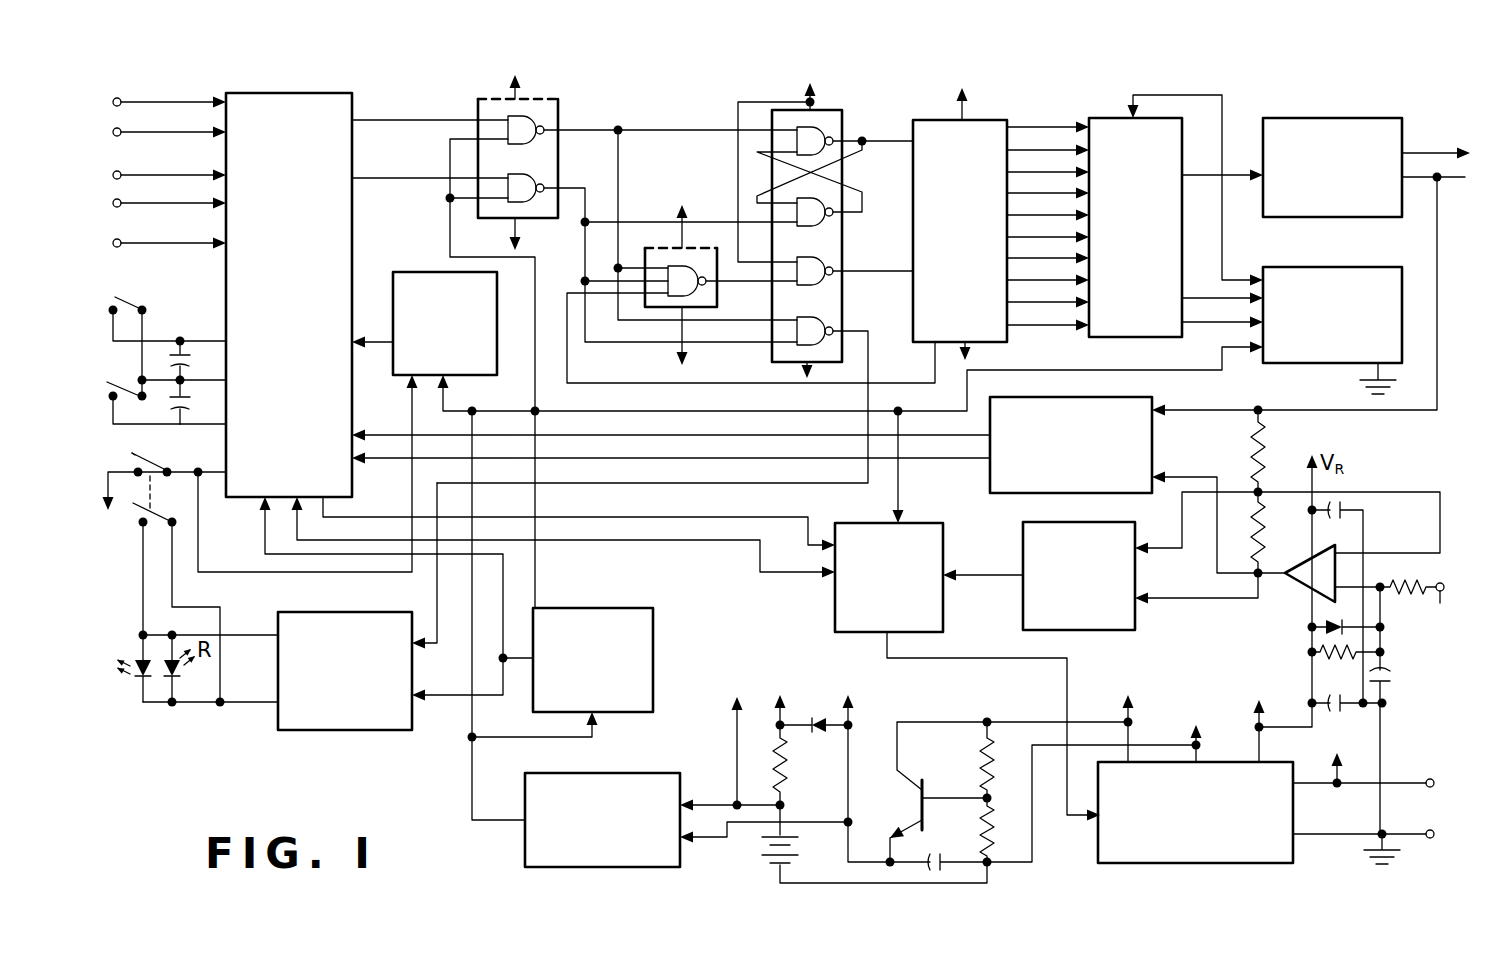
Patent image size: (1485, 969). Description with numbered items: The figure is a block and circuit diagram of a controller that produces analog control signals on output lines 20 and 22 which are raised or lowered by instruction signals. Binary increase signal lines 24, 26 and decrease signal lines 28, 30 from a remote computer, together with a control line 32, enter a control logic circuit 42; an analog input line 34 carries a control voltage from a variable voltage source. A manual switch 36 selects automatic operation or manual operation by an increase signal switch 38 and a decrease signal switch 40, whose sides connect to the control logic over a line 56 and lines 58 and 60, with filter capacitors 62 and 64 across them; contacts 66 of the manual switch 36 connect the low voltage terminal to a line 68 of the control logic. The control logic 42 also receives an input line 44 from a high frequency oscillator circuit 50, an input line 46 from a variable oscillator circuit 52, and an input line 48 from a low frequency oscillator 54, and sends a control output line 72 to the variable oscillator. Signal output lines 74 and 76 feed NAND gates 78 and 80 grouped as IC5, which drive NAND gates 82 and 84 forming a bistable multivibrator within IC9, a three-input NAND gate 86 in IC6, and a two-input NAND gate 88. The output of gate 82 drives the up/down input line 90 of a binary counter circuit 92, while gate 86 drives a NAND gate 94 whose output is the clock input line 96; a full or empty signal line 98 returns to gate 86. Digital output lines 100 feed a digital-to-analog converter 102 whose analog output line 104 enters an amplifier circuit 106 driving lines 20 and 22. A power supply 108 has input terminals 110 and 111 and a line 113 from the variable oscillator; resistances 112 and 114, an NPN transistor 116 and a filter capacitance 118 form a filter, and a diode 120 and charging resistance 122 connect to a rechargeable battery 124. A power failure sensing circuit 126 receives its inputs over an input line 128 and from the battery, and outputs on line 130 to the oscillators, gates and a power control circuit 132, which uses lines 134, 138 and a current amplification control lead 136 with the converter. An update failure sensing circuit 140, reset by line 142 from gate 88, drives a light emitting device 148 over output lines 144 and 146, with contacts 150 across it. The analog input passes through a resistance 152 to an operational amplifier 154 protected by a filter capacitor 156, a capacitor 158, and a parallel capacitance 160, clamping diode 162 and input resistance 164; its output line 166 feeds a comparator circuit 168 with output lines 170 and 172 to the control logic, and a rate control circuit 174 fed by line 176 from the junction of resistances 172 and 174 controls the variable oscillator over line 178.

The analog output line 20 is at (1430, 152).
The analog output line 22 is at (1440, 184).
The increase signal input line 24 is at (178, 102).
The increase signal input line 26 is at (178, 132).
The decrease signal input line 28 is at (178, 175).
The decrease signal input line 30 is at (178, 203).
The control input line 32 is at (178, 243).
The analog input line 34 is at (1443, 609).
The manual switch 36 is at (161, 506).
The increase signal switch 38 is at (115, 295).
The decrease signal switch 40 is at (162, 484).
The control logic circuit 42 is at (355, 107).
The input line from high frequency oscillator 44 is at (380, 346).
The input line from variable oscillator 46 is at (652, 543).
The input line from low frequency oscillator 48 is at (450, 693).
The high frequency oscillator circuit 50 is at (424, 270).
The variable oscillator circuit 52 is at (843, 527).
The low frequency oscillator 54 is at (625, 608).
The line 56 is at (213, 377).
The line 58 is at (193, 338).
The line 60 is at (207, 419).
The filter capacitor 62 is at (168, 361).
The filter capacitor 64 is at (190, 412).
The contacts of the manual switch 66 is at (132, 457).
The line 68 is at (206, 478).
The control output line 72 is at (783, 518).
The signal output line 74 is at (410, 118).
The signal output line 76 is at (437, 176).
The NAND gate 78 is at (541, 124).
The NAND gate 80 is at (539, 176).
The NAND gate 82 is at (802, 120).
The NAND gate 84 is at (825, 198).
The three-input NAND gate 86 is at (670, 248).
The two-input NAND gate 88 is at (810, 318).
The up/down input line 90 is at (877, 138).
The binary counter circuit 92 is at (952, 117).
The NAND gate 94 is at (817, 253).
The clock input line 96 is at (897, 272).
The full or empty signal line 98 is at (810, 380).
The digital output lines 100 is at (1037, 95).
The digital-to-analog converter 102 is at (1115, 115).
The analog output line 104 is at (1236, 185).
The amplifier circuit 106 is at (1333, 114).
The power supply 108 is at (1275, 843).
The input terminal 110 is at (1422, 778).
The input terminal 111 is at (1418, 810).
The resistance 112 is at (982, 752).
The line 113 is at (985, 660).
The resistance 114 is at (985, 842).
The NPN transistor 116 is at (918, 799).
The filter capacitance 118 is at (945, 866).
The diode 120 is at (828, 716).
The charging resistance 122 is at (797, 757).
The rechargeable battery 124 is at (765, 860).
The power failure sensing circuit 126 is at (655, 773).
The power failure input line 128 is at (702, 803).
The power failure output line 130 is at (472, 795).
The power control circuit 132 is at (1340, 363).
The line 134 is at (1228, 128).
The current amplification control lead 136 is at (1225, 298).
The line 138 is at (1210, 328).
The update failure sensing circuit 140 is at (360, 613).
The reset line 142 is at (437, 625).
The output line 144 is at (245, 632).
The output line 146 is at (237, 705).
The solid state light emitting device 148 is at (150, 680).
The contacts of the manual switch 150 is at (170, 523).
The resistance 152 is at (1410, 593).
The operational integrated circuit amplifier 154 is at (1340, 577).
The filter capacitor 156 is at (1393, 679).
The capacitor 158 is at (1347, 508).
The capacitance 160 is at (1345, 711).
The clamping diode 162 is at (1312, 622).
The input resistance 164 is at (1318, 660).
The line 166 is at (1212, 568).
The comparator circuit 168 is at (1153, 457).
The comparator output line 170 is at (965, 433).
The comparator output line / resistance 172 is at (972, 459).
The rate control circuit / resistance 174 is at (1023, 543).
The line 176 is at (1162, 550).
The rate control output line 178 is at (978, 577).
The integrated circuit IC5 is at (622, 338).
The integrated circuit IC6 is at (712, 281).
The integrated circuit IC9 is at (669, 267).